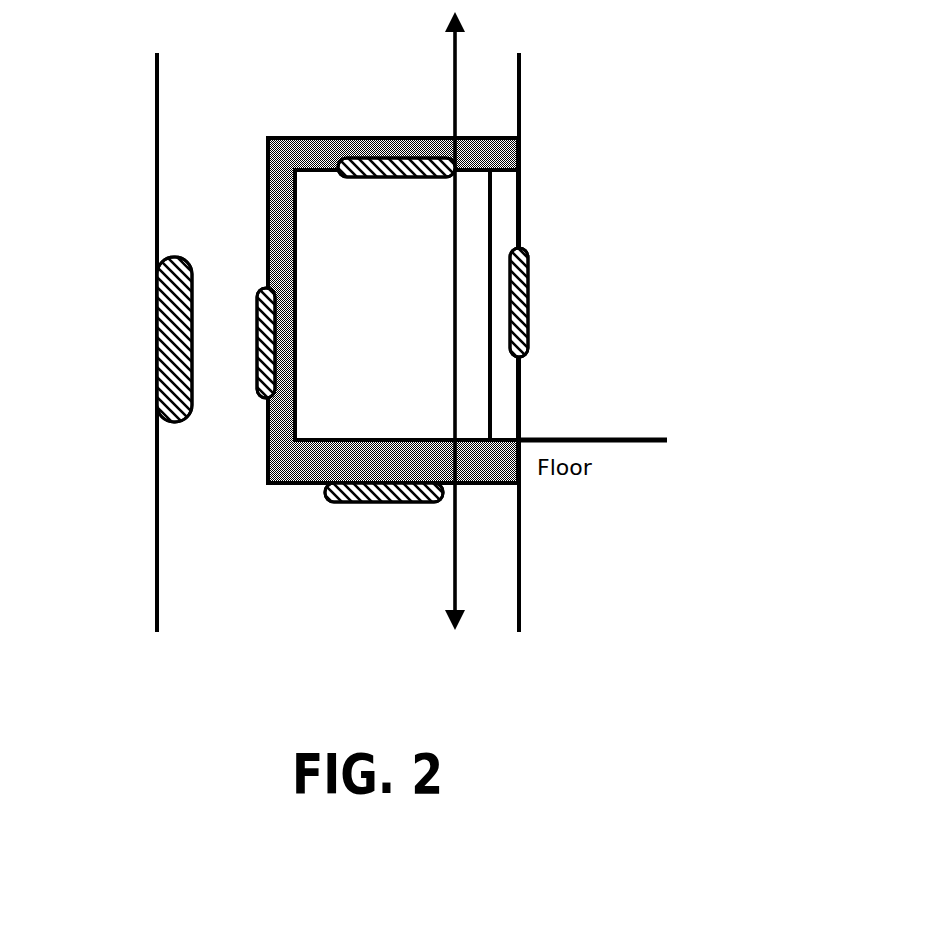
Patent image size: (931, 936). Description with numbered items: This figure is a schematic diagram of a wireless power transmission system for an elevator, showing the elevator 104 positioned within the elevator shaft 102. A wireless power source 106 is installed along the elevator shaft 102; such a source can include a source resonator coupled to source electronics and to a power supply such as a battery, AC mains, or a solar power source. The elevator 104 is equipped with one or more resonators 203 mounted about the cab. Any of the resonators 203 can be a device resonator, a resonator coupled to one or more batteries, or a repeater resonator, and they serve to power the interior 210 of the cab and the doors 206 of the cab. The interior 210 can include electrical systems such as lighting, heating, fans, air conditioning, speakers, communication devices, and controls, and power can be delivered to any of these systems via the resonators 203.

The elevator shaft 102 is at (157, 97).
The elevator 104 is at (490, 137).
The wireless power source 106 is at (153, 368).
The resonators 203 is at (280, 343).
The doors of the cab 206 is at (504, 199).
The interior of the cab 210 is at (413, 305).